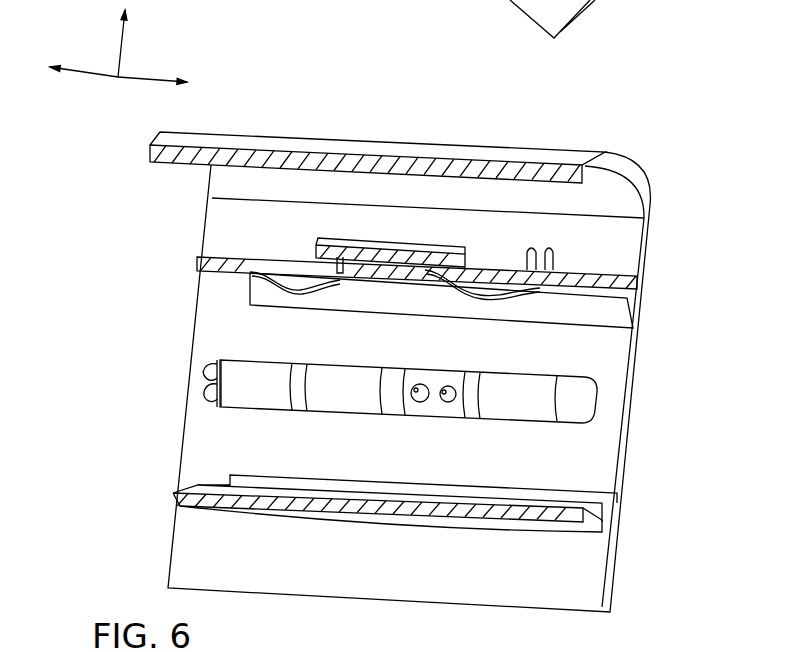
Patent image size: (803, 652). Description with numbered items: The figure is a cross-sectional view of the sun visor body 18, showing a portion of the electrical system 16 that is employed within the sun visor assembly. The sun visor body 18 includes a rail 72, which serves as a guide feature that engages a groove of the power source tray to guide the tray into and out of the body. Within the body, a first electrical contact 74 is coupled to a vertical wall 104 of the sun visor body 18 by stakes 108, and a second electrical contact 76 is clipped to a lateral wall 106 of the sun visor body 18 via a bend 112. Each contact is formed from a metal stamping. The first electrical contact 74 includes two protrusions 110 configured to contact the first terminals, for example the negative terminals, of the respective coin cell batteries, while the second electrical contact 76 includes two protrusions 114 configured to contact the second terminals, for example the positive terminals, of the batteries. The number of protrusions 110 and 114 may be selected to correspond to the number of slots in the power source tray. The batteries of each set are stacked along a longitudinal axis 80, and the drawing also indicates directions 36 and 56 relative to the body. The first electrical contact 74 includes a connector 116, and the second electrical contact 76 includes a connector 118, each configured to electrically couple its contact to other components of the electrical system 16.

The electrical system 16 is at (663, 332).
The sun visor body 18 is at (545, 148).
The lateral direction 36 is at (148, 78).
The vertical direction 56 is at (120, 48).
The longitudinal axis 80 is at (90, 75).
The rail 72 is at (577, 512).
The first electrical contact 74 is at (572, 407).
The second electrical contact 76 is at (565, 300).
The vertical wall 104 is at (613, 373).
The lateral wall 106 is at (608, 283).
The stakes 108 is at (450, 402).
The protrusions 110 is at (338, 392).
The bend 112 is at (407, 273).
The protrusions 114 is at (335, 262).
The connector 116 is at (212, 366).
The connector 118 is at (552, 258).